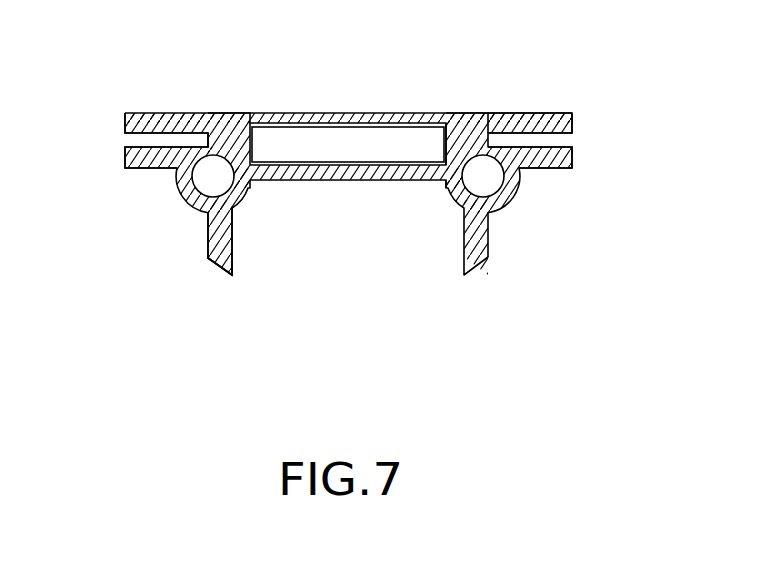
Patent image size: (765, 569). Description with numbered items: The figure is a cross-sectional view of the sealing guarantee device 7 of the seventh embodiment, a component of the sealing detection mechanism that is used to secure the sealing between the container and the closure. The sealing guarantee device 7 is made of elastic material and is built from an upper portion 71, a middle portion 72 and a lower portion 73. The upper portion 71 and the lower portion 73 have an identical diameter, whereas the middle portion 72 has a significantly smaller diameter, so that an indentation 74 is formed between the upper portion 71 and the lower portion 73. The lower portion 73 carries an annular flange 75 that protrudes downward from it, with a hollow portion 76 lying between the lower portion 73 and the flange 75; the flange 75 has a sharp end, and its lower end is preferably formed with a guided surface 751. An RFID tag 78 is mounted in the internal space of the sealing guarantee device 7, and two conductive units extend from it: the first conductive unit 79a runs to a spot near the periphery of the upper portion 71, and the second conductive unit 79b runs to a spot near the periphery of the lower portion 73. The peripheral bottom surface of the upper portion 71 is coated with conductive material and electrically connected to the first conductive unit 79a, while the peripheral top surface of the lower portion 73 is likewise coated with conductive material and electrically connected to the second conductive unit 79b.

The sealing guarantee device 7 is at (346, 104).
The upper portion 71 is at (573, 122).
The middle portion 72 is at (472, 130).
The lower portion 73 is at (573, 161).
The indentation 74 is at (133, 140).
The annular flange 75 is at (213, 241).
The guided surface 751 is at (210, 265).
The hollow portion 76 is at (207, 188).
The RFID tag 78 is at (417, 132).
The first conductive unit 79a is at (222, 113).
The second conductive unit 79b is at (247, 112).